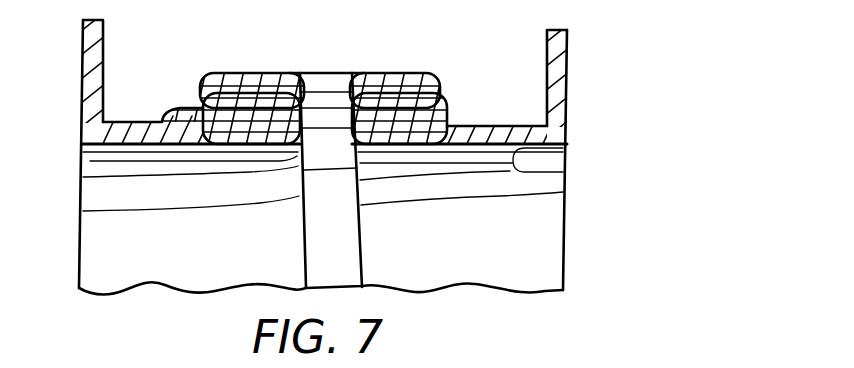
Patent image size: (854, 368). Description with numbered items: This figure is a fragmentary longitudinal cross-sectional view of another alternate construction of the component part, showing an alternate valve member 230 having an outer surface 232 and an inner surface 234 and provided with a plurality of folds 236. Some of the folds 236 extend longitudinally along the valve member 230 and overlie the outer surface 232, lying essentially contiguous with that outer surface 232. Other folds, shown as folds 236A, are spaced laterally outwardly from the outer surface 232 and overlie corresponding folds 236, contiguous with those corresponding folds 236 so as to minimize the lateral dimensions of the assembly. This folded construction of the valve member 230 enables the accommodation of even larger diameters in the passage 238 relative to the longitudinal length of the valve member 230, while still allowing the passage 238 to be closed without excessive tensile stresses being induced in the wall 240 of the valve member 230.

The valve member 230 is at (579, 88).
The outer surface 232 is at (491, 126).
The inner surface 234 is at (560, 168).
The folds 236 is at (160, 128).
The folds 236A is at (205, 88).
The passage 238 is at (540, 216).
The wall 240 is at (579, 259).